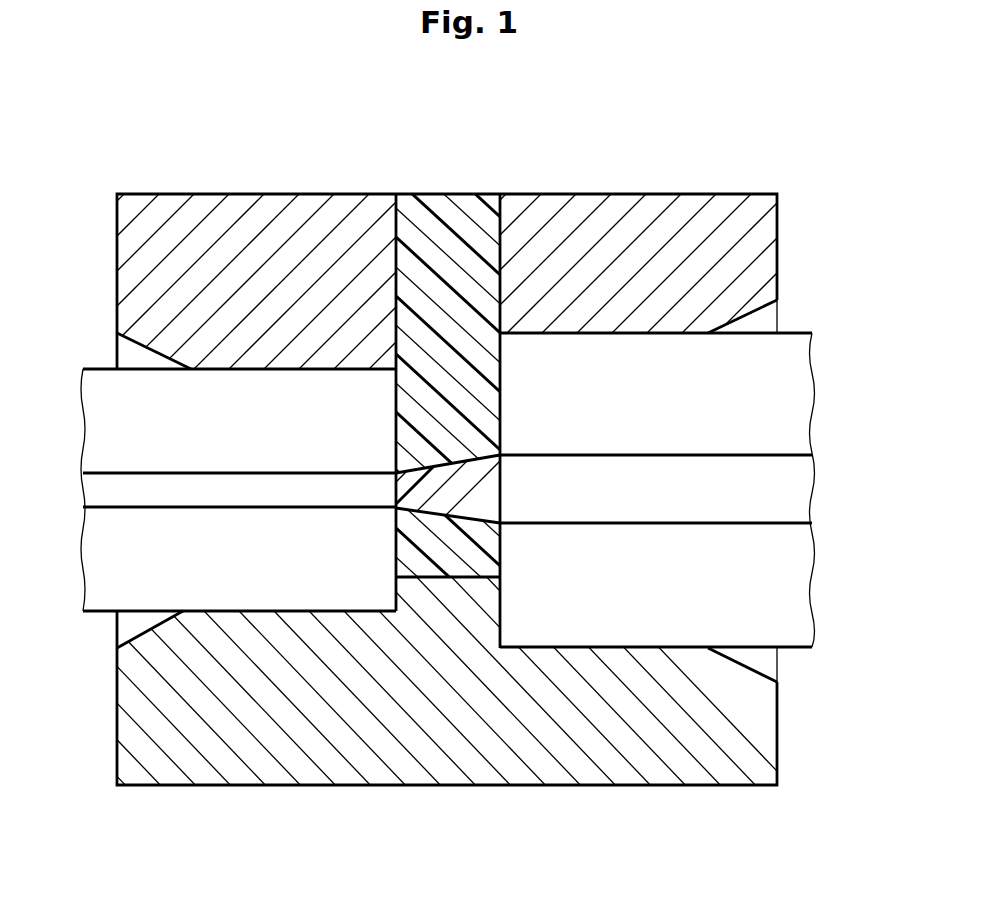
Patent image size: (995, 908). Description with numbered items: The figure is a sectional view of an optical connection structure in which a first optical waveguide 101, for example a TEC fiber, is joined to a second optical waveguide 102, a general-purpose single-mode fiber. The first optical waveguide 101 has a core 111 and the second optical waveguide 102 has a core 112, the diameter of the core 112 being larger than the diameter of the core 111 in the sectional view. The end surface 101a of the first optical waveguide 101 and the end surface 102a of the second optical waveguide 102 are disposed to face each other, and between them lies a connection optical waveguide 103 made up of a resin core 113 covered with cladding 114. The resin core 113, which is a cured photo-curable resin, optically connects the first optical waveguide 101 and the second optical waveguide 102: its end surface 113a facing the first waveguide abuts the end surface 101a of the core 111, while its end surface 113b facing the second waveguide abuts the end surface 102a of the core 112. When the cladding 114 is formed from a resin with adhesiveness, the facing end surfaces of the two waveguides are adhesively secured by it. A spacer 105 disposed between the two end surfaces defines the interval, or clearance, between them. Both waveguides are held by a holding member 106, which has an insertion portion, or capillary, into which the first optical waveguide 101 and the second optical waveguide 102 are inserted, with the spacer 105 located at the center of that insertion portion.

The first optical waveguide 101 is at (279, 274).
The end surface 101a is at (249, 302).
The second optical waveguide 102 is at (645, 269).
The end surface 102a is at (656, 302).
The connection optical waveguide 103 is at (395, 128).
The spacer 105 is at (533, 708).
The holding member 106 is at (770, 745).
The core 111 is at (220, 444).
The core 112 is at (674, 441).
The resin core 113 is at (450, 374).
The end surface 113a is at (361, 380).
The end surface 113b is at (543, 365).
The cladding 114 is at (444, 471).